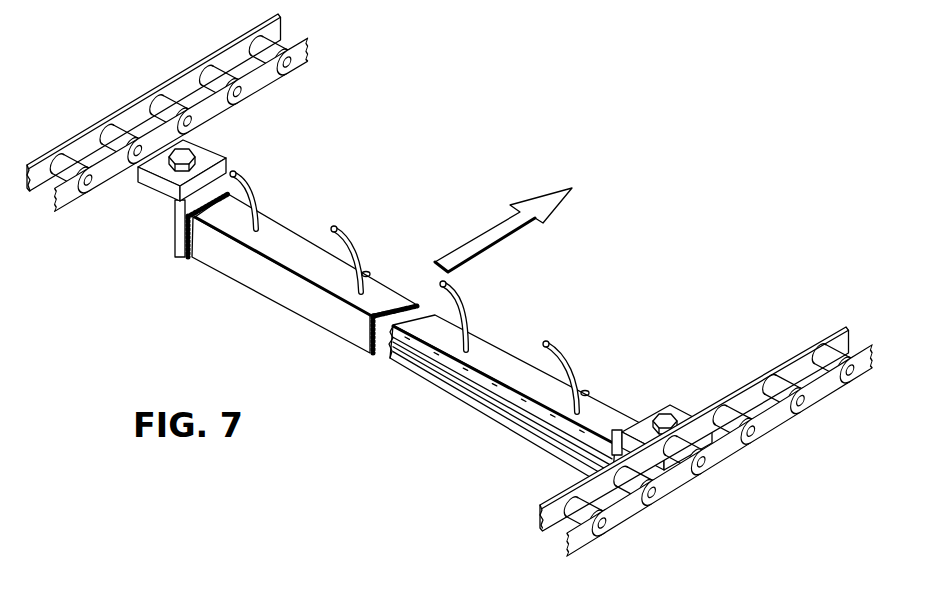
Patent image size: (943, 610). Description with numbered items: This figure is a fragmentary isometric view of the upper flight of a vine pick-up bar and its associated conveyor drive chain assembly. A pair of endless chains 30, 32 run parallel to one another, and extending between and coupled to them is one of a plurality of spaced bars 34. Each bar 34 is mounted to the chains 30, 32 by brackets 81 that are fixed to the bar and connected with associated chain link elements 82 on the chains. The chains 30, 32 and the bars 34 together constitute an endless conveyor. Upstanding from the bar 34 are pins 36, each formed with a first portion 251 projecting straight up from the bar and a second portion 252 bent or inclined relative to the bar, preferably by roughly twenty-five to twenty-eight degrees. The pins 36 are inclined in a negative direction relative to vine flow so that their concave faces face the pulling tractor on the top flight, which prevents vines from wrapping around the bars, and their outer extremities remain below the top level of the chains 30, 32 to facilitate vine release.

The chain 30 is at (230, 41).
The chain 32 is at (793, 352).
The bar 34 is at (302, 298).
The pin 36 is at (244, 179).
The bracket 81 is at (172, 229).
The chain link element 82 is at (205, 155).
The first portion 251 is at (368, 273).
The second portion 252 is at (351, 237).